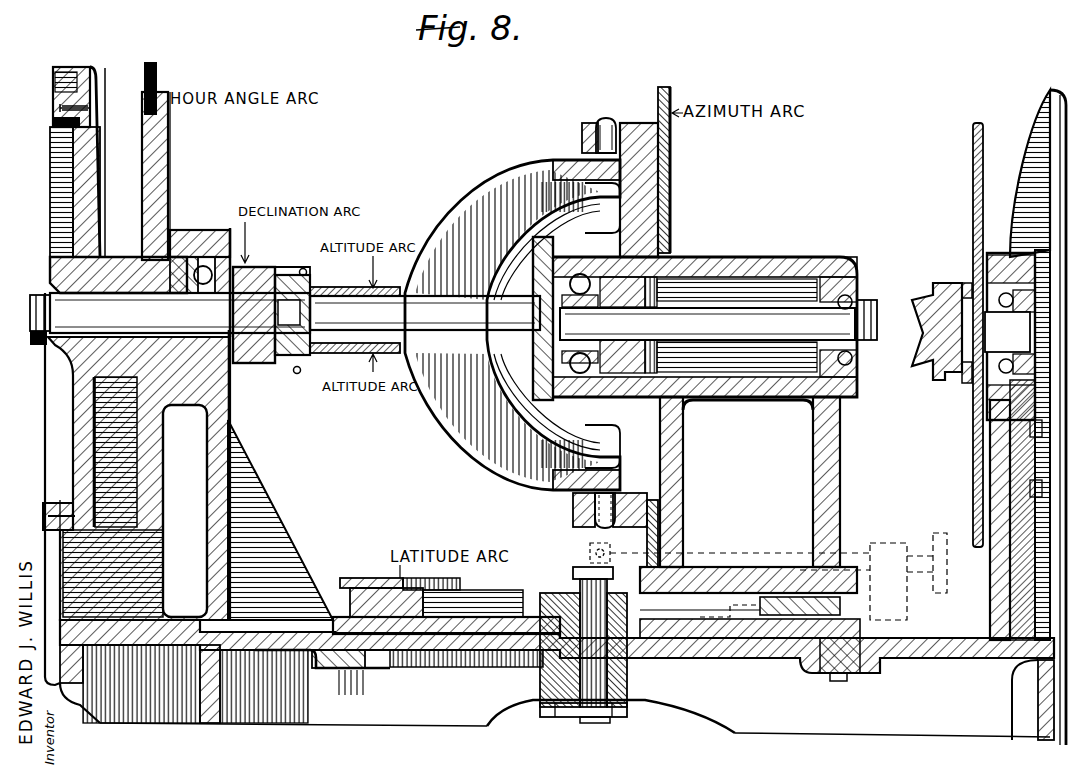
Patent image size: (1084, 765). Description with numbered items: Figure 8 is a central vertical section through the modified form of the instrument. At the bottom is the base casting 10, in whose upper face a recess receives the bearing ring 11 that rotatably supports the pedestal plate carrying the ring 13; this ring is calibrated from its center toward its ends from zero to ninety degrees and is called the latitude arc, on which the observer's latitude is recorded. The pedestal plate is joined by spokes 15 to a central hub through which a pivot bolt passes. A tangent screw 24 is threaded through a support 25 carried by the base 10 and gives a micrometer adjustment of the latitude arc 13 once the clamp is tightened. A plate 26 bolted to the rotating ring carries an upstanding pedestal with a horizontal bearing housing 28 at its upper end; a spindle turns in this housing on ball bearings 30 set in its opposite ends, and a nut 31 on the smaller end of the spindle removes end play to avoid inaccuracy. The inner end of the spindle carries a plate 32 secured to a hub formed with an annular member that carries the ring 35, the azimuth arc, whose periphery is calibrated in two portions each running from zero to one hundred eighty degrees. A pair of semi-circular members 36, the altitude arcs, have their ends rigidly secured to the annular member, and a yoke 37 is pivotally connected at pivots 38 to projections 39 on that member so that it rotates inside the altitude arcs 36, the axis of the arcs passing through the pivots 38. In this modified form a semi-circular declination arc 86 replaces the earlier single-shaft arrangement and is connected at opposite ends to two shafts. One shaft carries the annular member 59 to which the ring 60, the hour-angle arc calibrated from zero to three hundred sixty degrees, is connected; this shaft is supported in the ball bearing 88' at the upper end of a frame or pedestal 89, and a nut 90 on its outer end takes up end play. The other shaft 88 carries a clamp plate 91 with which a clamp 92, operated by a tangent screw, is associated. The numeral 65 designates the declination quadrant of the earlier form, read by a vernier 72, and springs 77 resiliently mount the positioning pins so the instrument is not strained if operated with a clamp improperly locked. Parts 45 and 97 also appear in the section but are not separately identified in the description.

The base casting 10 is at (450, 738).
The bearing ring 11 is at (338, 672).
The latitude arc ring 13 is at (352, 578).
The spokes 15 is at (510, 616).
The tangent screw 24 is at (902, 550).
The support 25 is at (920, 594).
The plate 26 is at (739, 560).
The horizontal bearing housing 28 is at (763, 262).
The ball bearings 30 is at (858, 352).
The nut 31 is at (866, 301).
The plate 32 is at (540, 285).
The azimuth arc ring 35 is at (672, 107).
The altitude arcs 36 is at (388, 292).
The yoke 37 is at (508, 186).
The pivots 38 is at (620, 112).
The projections 39 is at (590, 122).
The end cap 45 is at (53, 100).
The annular member 59 is at (168, 176).
The hour-angle arc ring 60 is at (144, 104).
The declination quadrant 65 is at (268, 268).
The vernier 72 is at (285, 275).
The springs 77 is at (298, 379).
The semi-circular declination arc 86 is at (243, 365).
The shaft 88 is at (977, 336).
The ball bearing 88' is at (208, 255).
The frame or pedestal 89 is at (222, 478).
The nut 90 is at (50, 280).
The clamp plate 91 is at (972, 458).
The clamp 92 is at (960, 398).
The shaft nut 97 is at (80, 318).